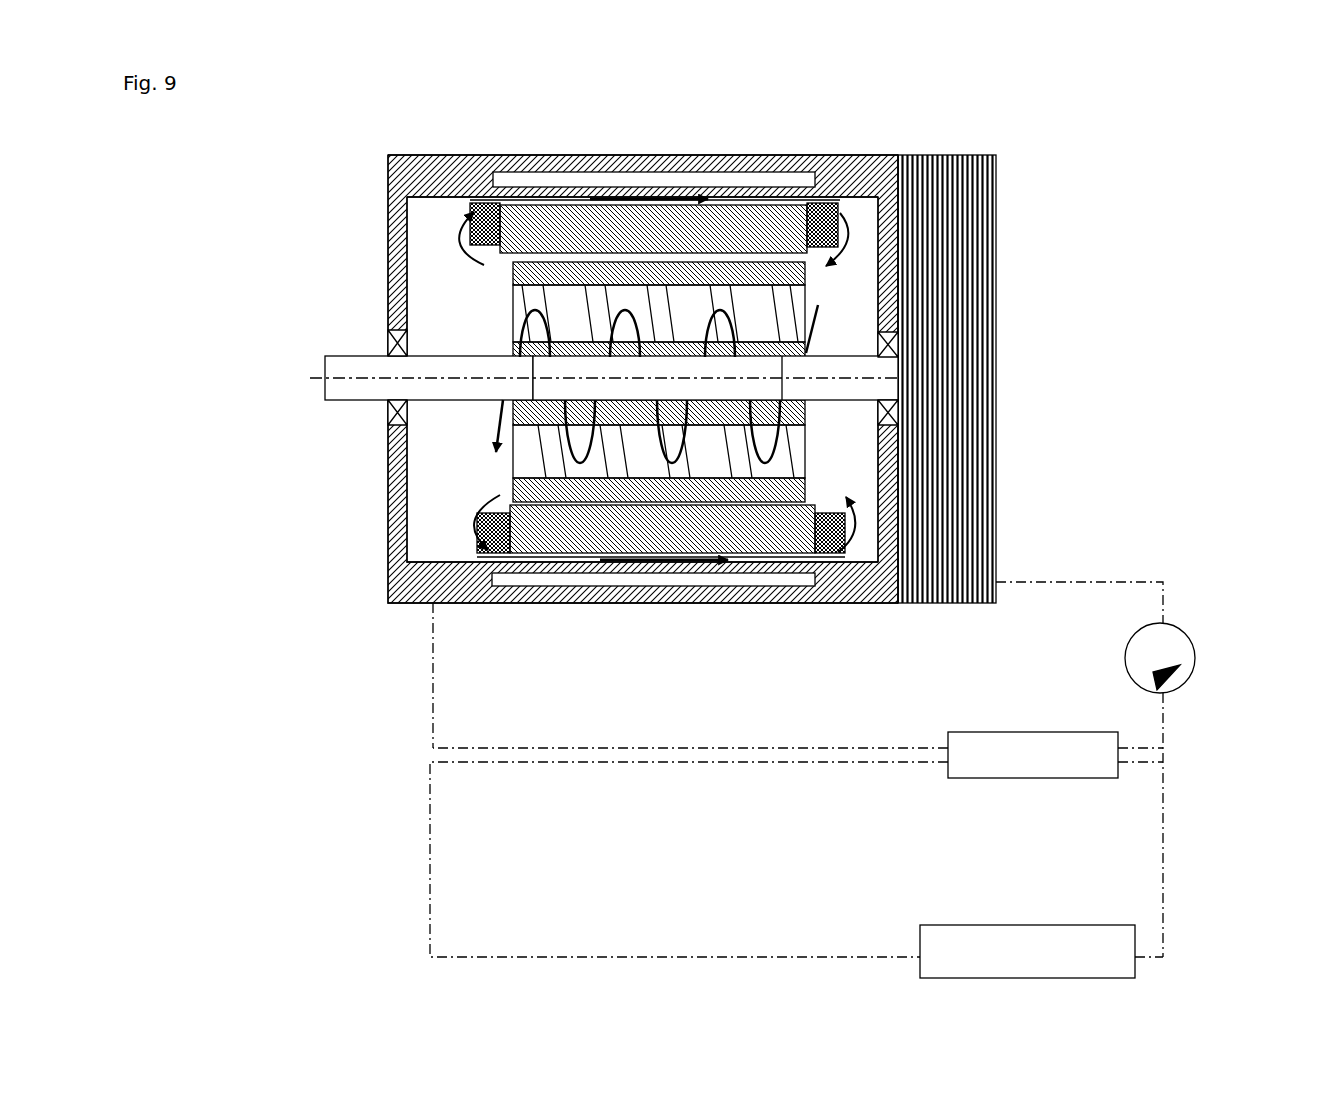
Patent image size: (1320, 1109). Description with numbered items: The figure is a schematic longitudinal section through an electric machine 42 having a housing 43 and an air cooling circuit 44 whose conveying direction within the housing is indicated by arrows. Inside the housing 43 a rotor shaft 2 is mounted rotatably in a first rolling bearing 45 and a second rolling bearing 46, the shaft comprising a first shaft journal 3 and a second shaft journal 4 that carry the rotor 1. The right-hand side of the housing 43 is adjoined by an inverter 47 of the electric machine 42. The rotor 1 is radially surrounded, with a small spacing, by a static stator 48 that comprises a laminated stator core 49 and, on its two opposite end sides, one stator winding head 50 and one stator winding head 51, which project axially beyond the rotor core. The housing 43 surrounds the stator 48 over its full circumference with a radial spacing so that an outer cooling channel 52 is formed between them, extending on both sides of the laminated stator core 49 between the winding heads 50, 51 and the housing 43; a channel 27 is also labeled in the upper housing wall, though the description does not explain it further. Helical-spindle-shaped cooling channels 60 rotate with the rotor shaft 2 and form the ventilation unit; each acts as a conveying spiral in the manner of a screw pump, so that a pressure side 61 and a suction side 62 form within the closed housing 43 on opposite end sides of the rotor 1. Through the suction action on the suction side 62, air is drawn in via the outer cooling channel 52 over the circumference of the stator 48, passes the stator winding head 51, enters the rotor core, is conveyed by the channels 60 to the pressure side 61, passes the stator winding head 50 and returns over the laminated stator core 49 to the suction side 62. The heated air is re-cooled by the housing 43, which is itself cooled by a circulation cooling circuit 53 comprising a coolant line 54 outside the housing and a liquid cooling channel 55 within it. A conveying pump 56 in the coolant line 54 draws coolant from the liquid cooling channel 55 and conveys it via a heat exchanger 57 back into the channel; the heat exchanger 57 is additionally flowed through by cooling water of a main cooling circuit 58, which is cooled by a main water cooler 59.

The rotor 1 is at (468, 336).
The rotor shaft 2 is at (303, 401).
The first shaft journal 3 is at (345, 375).
The second shaft journal 4 is at (888, 372).
The coolant channel 27 is at (657, 178).
The electric machine 42 is at (288, 553).
The housing 43 is at (385, 483).
The air cooling circuit 44 is at (633, 203).
The first rolling bearing 45 is at (395, 345).
The second rolling bearing 46 is at (880, 335).
The inverter 47 is at (925, 197).
The stator 48 is at (440, 224).
The laminated stator core 49 is at (690, 215).
The stator winding head 50 is at (470, 213).
The stator winding head 51 is at (815, 207).
The outer cooling channel 52 is at (540, 200).
The circulation cooling circuit 53 is at (394, 685).
The coolant line 54 is at (432, 645).
The liquid cooling channel 55 is at (545, 580).
The conveying pump 56 is at (1173, 648).
The heat exchanger 57 is at (1005, 745).
The main cooling circuit 58 is at (394, 835).
The main water cooler 59 is at (957, 938).
The helical-spindle-shaped cooling channels 60 is at (515, 290).
The pressure side 61 is at (462, 148).
The suction side 62 is at (845, 160).